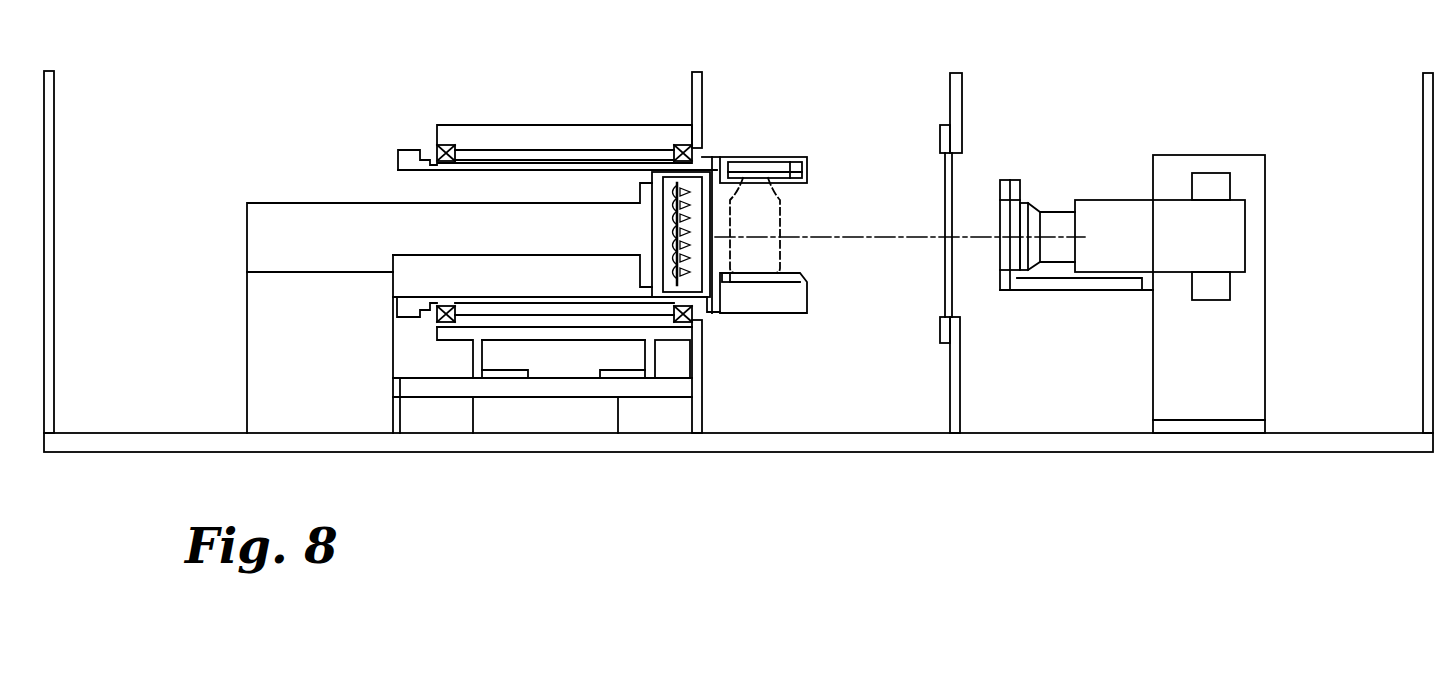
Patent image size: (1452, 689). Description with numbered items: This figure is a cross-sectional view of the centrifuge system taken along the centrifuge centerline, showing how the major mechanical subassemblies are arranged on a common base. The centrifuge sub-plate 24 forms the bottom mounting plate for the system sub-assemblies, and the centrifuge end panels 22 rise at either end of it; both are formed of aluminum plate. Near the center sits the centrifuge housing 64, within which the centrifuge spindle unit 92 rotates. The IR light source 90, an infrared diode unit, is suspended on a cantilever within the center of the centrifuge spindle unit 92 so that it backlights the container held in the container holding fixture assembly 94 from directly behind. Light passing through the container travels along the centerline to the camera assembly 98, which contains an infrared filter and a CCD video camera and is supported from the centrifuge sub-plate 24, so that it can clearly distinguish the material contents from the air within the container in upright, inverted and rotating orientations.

The centrifuge end panel 22 is at (55, 170).
The centrifuge sub-plate 24 is at (157, 432).
The centrifuge housing 64 is at (522, 123).
The IR light source 90 is at (282, 203).
The centrifuge spindle unit 92 is at (527, 231).
The container holding fixture assembly 94 is at (807, 273).
The camera assembly 98 is at (1102, 200).